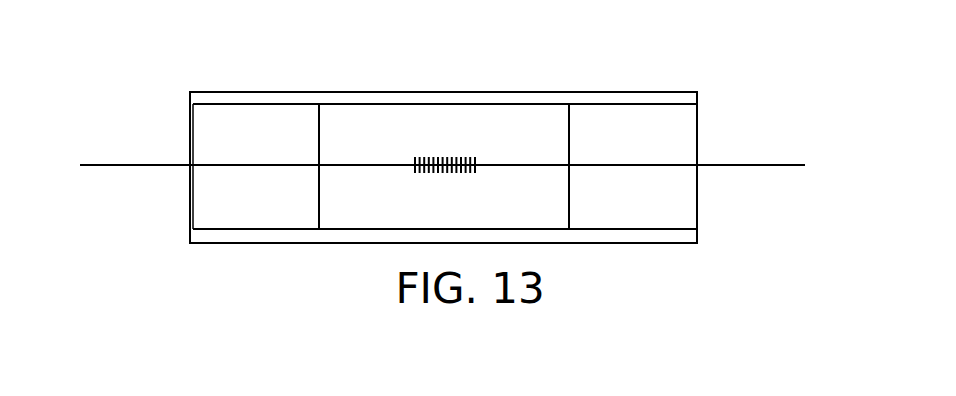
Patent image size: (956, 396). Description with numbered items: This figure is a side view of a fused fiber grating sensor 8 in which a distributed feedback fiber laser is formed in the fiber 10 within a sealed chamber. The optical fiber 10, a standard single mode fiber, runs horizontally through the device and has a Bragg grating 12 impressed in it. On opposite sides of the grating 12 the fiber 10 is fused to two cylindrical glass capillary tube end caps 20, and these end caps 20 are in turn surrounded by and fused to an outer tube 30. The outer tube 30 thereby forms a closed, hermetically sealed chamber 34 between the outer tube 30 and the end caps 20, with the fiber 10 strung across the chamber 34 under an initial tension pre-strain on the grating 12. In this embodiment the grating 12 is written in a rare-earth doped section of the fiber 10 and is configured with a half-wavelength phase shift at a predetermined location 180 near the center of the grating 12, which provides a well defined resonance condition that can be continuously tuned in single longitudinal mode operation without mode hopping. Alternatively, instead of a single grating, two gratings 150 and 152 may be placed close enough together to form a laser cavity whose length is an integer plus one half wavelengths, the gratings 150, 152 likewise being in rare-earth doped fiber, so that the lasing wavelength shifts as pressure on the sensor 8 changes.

The fused tension-based fiber grating pressure sensor 8 is at (132, 64).
The optical waveguide 10 is at (442, 133).
The Bragg grating 12 is at (424, 147).
The capillary tube end caps 20 is at (439, 166).
The outer tube 30 is at (443, 152).
The chamber 34 is at (528, 127).
The grating 150 is at (404, 193).
The grating 152 is at (496, 193).
The predetermined location 180 is at (478, 141).